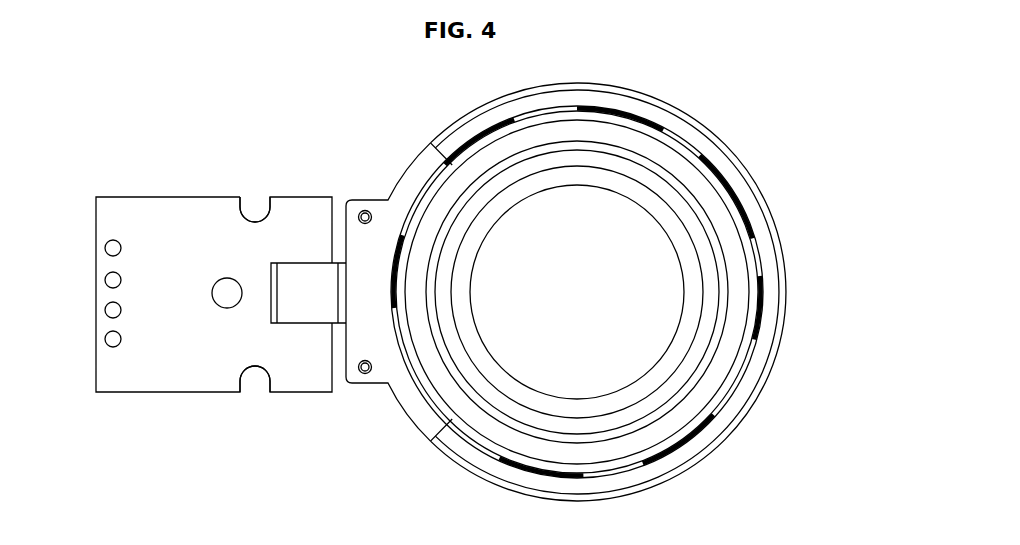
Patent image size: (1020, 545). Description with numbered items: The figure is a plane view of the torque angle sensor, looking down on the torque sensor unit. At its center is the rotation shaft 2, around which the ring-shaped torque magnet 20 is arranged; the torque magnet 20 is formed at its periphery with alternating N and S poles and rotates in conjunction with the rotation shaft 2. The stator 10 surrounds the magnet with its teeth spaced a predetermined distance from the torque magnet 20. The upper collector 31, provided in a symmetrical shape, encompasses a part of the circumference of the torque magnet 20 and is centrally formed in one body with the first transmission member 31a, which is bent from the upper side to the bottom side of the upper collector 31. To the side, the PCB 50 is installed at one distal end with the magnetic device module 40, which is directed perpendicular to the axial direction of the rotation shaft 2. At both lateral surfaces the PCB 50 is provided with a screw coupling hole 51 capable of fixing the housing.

The rotation shaft 2 is at (689, 262).
The stator 10 is at (747, 173).
The torque magnet 20 is at (753, 233).
The upper collector 31 is at (417, 180).
The first transmission member 31a is at (315, 278).
The magnetic device module 40 is at (268, 376).
The PCB 50 is at (175, 215).
The screw coupling hole 51 is at (243, 210).